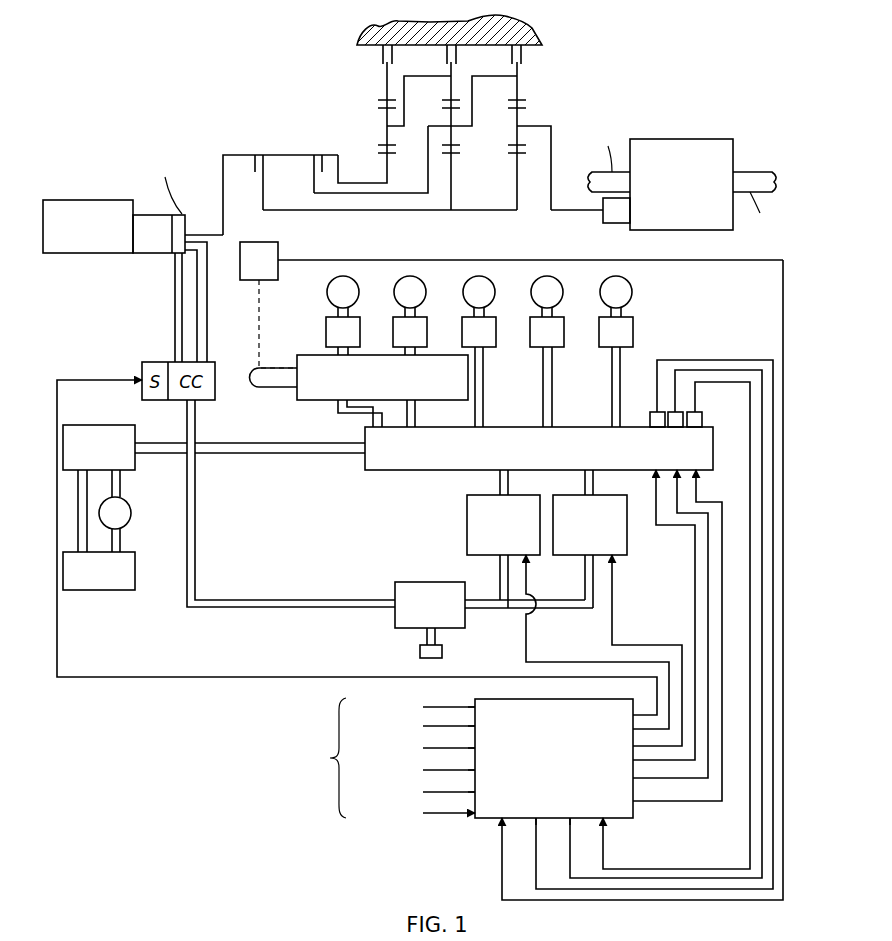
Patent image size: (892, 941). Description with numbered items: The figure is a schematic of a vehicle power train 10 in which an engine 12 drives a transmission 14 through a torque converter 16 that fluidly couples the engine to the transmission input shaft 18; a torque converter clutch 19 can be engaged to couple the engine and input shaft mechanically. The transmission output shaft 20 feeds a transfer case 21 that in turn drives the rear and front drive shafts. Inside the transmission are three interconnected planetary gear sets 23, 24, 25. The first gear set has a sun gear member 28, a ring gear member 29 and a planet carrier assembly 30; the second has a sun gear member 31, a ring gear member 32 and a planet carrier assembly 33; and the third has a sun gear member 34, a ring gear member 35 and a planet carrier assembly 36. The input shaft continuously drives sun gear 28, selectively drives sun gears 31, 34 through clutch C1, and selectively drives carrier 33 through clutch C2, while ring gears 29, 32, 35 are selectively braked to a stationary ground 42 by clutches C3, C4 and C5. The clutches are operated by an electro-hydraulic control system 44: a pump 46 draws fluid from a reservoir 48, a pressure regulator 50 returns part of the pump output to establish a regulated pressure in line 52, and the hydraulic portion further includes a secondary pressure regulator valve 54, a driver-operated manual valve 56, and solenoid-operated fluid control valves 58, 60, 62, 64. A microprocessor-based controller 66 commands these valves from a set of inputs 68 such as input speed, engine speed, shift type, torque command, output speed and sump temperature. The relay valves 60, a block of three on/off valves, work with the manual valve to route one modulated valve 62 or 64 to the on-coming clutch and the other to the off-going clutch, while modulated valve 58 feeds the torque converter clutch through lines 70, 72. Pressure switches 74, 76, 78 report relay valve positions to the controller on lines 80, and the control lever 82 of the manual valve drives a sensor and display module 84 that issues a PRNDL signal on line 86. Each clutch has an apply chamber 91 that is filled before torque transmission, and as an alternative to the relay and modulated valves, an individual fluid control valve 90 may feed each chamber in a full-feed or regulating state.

The vehicle power train 10 is at (230, 97).
The engine 12 is at (88, 255).
The transmission 14 is at (346, 123).
The torque converter 16 is at (140, 255).
The transmission input shaft 18 is at (240, 153).
The torque converter clutch 19 is at (187, 232).
The transmission output shaft 20 is at (566, 212).
The transfer case 21 is at (665, 138).
The planetary gear set 23 is at (398, 137).
The planetary gear set 24 is at (466, 137).
The planetary gear set 25 is at (534, 111).
The sun gear member 28 is at (383, 158).
The ring gear member 29 is at (380, 100).
The planet carrier assembly 30 is at (403, 123).
The sun gear member 31 is at (455, 158).
The ring gear member 32 is at (443, 100).
The planet carrier assembly 33 is at (471, 124).
The sun gear member 34 is at (521, 156).
The ring gear member 35 is at (530, 100).
The planet carrier assembly 36 is at (552, 131).
The stationary member or ground 42 is at (543, 35).
The electro-hydraulic control system 44 is at (815, 310).
The pump 46 is at (131, 510).
The reservoir 48 is at (136, 566).
The pressure regulator 50 is at (112, 424).
The line 52 is at (268, 455).
The secondary pressure regulator valve 54 is at (393, 620).
The manual valve 56 is at (325, 400).
The solenoid-operated fluid control valve 58 is at (217, 383).
The relay valves 60 is at (382, 472).
The modulated valve 62 is at (465, 526).
The modulated valve 64 is at (628, 526).
The controller 66 is at (485, 820).
The inputs 68 is at (389, 760).
The line 70 is at (175, 345).
The line 72 is at (207, 346).
The pressure switch 74 is at (657, 411).
The pressure switch 76 is at (675, 411).
The pressure switch 78 is at (700, 411).
The lines 80 is at (737, 372).
The control lever 82 is at (287, 388).
The sensor and display module 84 is at (280, 252).
The line 86 is at (683, 260).
The fluid control valve 90 is at (361, 299).
The apply chamber 91 is at (330, 300).
The clutch C1 is at (256, 182).
The clutch C2 is at (310, 183).
The clutch C3 is at (376, 69).
The clutch C4 is at (440, 70).
The clutch C5 is at (528, 67).